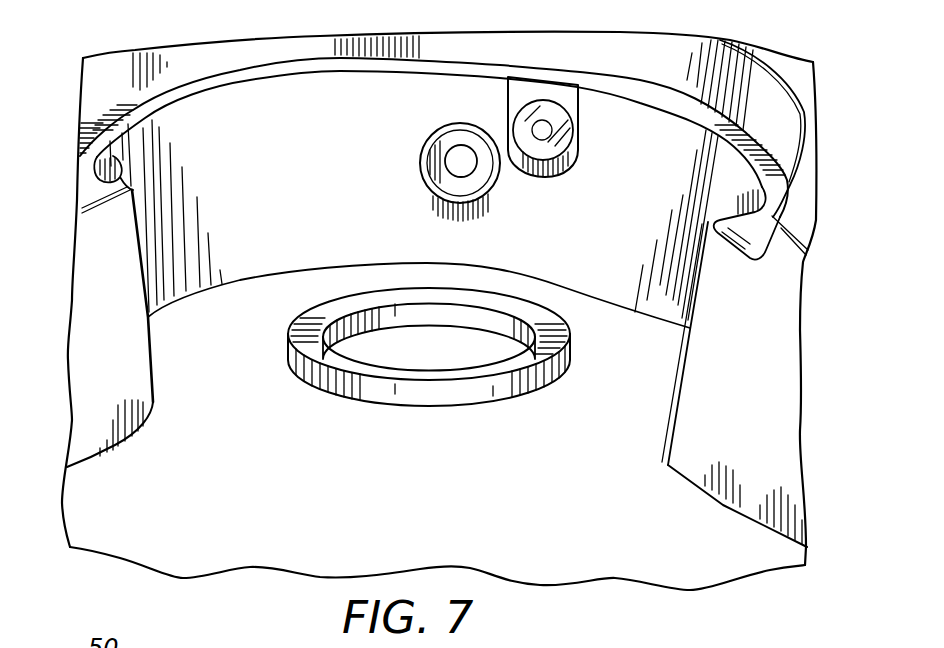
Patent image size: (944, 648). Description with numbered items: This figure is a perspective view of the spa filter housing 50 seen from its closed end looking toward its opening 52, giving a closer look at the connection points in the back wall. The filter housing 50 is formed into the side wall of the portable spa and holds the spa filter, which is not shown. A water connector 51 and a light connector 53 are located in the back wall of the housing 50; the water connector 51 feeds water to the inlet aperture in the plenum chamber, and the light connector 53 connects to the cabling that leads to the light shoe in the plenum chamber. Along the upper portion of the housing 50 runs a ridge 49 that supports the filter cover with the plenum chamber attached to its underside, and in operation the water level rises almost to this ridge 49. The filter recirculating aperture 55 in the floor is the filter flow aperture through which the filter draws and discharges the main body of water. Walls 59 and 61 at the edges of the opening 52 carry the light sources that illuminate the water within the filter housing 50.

The ridge 49 is at (237, 68).
The filter housing 50 is at (795, 70).
The water connector 51 is at (452, 140).
The opening 52 is at (640, 400).
The light connector 53 is at (544, 125).
The filter recirculating aperture 55 is at (342, 303).
The wall 59 is at (95, 157).
The wall 61 is at (733, 202).